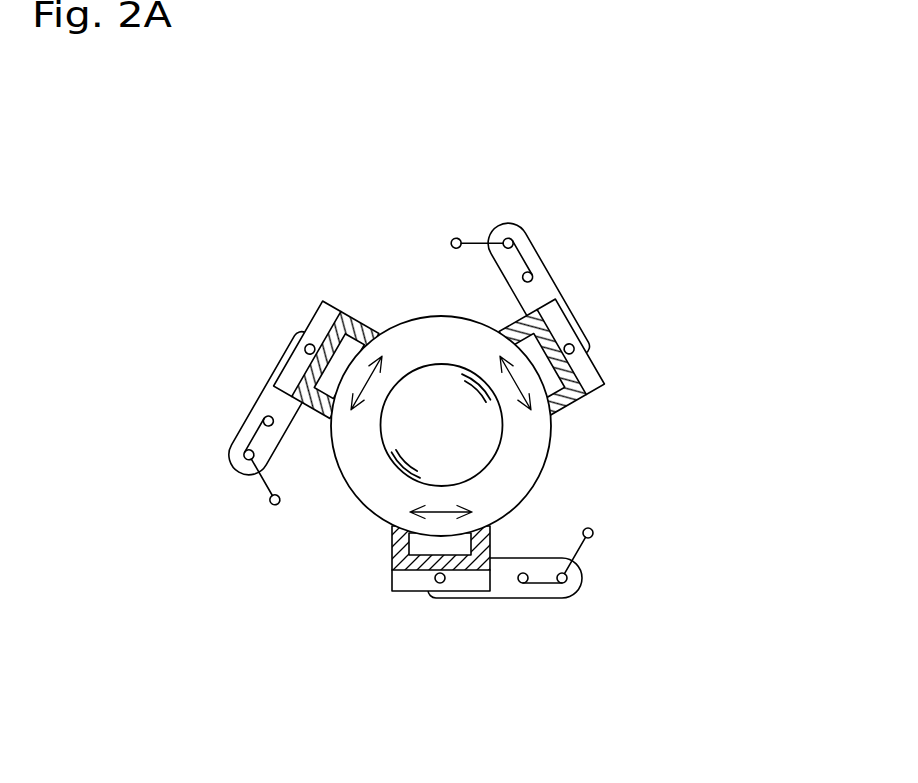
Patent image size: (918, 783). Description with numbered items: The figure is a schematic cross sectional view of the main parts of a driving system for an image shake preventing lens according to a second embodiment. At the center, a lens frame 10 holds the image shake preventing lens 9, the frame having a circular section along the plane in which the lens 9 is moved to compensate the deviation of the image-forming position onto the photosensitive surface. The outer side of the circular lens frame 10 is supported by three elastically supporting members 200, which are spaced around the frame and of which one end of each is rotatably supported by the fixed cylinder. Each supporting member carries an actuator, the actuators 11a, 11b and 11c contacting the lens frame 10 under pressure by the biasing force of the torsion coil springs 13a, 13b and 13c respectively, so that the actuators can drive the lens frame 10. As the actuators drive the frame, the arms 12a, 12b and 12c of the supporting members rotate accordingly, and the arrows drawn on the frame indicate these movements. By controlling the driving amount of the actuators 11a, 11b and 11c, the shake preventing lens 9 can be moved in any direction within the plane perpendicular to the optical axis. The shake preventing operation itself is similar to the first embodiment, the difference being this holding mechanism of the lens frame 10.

The image shake preventing lens 9 is at (472, 435).
The lens frame 10 is at (523, 487).
The actuator 11a is at (352, 320).
The actuator 11b is at (592, 396).
The actuator 11c is at (393, 552).
The arm 12a is at (258, 418).
The arm 12b is at (553, 272).
The arm 12c is at (483, 598).
The torsion coil spring 13a is at (257, 492).
The torsion coil spring 13b is at (463, 241).
The torsion coil spring 13c is at (588, 568).
The elastically supporting member 200 is at (461, 416).